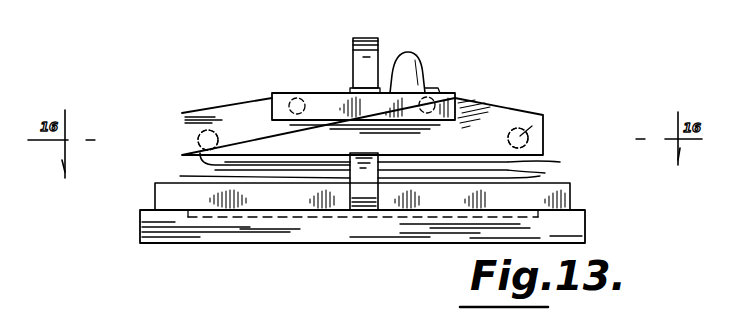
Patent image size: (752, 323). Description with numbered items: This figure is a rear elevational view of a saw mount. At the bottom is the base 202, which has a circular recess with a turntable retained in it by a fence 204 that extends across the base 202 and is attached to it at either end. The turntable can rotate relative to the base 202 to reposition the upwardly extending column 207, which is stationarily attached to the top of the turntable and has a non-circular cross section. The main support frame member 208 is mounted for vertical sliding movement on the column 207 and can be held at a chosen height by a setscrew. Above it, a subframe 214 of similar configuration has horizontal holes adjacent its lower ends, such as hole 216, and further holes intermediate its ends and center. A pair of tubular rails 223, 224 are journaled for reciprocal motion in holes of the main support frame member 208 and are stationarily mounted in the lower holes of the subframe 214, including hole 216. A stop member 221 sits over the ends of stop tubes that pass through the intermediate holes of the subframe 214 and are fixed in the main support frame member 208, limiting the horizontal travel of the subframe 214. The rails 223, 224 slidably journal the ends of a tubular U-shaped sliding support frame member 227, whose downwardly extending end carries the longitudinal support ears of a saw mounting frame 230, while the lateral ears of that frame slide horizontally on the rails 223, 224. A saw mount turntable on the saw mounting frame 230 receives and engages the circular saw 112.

The circular saw 112 is at (353, 50).
The base 202 is at (584, 226).
The fence 204 is at (572, 191).
The column 207 is at (230, 177).
The main support frame member 208 is at (498, 105).
The subframe 214 is at (545, 125).
The horizontal hole 216 is at (197, 142).
The stop member 221 is at (328, 100).
The tubular rail 223 is at (208, 128).
The tubular rail 224 is at (529, 147).
The tubular U-shaped sliding support frame member 227 is at (560, 162).
The saw mounting frame 230 is at (545, 173).